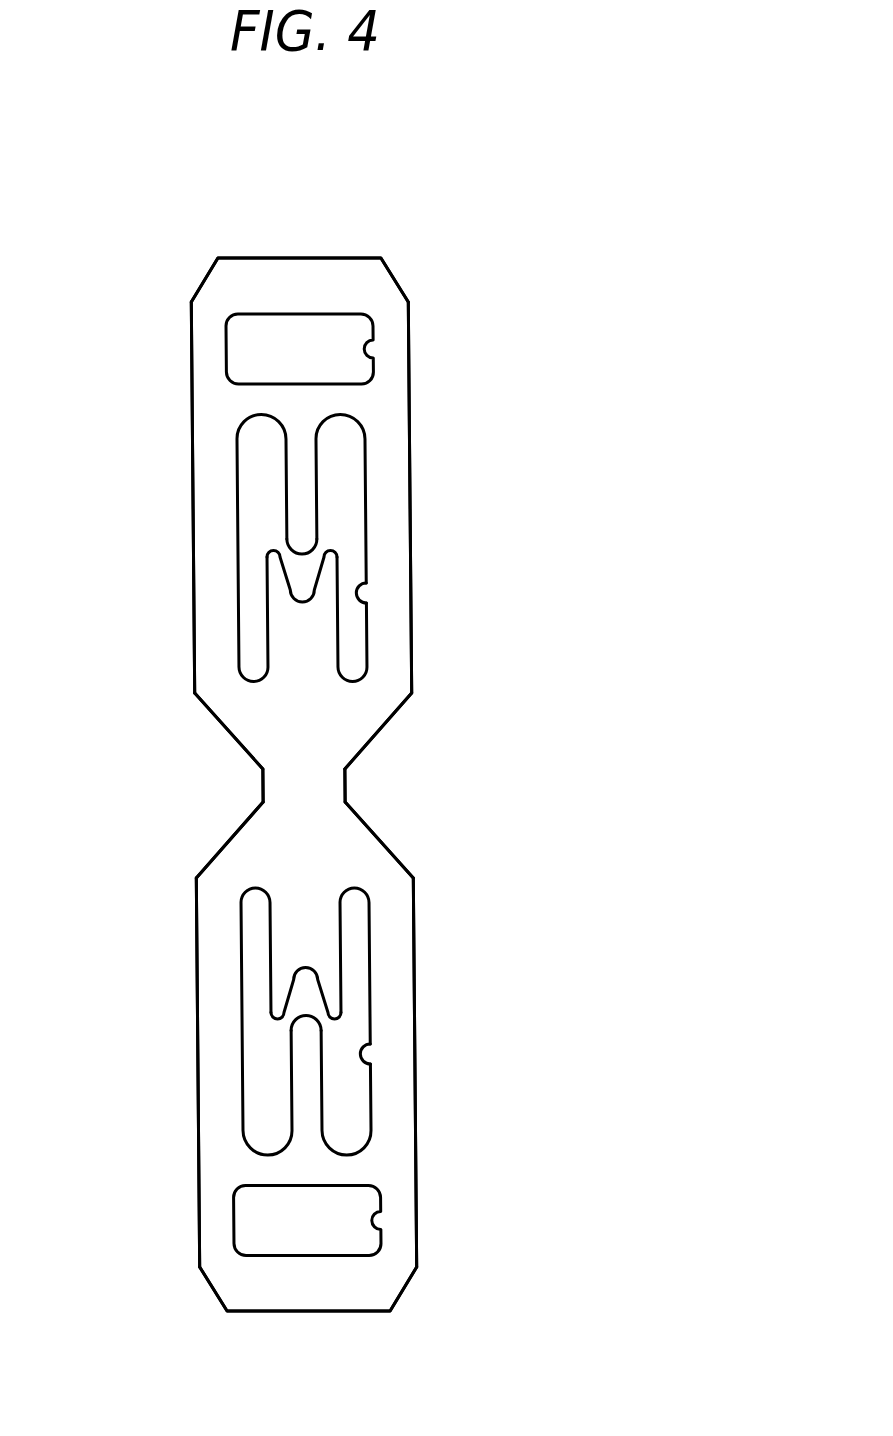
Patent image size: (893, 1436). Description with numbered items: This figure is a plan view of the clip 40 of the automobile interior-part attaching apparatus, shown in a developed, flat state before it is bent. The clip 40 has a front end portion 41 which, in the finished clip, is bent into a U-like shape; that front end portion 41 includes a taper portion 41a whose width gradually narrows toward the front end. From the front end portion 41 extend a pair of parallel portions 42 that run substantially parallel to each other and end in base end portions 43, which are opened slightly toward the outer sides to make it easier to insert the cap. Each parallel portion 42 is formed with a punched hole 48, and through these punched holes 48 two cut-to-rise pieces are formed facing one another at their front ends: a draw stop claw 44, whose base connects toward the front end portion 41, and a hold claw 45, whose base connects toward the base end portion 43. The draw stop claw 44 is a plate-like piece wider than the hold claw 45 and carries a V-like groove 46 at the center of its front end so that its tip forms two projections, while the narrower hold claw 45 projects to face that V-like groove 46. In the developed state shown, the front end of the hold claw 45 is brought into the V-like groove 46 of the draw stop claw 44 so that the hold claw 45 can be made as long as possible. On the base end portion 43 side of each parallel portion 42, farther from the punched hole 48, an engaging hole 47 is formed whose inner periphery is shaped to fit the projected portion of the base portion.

The clip 40 is at (167, 268).
The front end portion 41 is at (348, 786).
The taper portion 41a is at (222, 730).
The parallel portions 42 is at (410, 510).
The base end portions 43 is at (394, 274).
The draw stop claw 44 is at (338, 643).
The hold claw 45 is at (321, 490).
The V-like groove 46 is at (280, 553).
The engaging hole 47 is at (378, 359).
The punched holes 48 is at (358, 600).